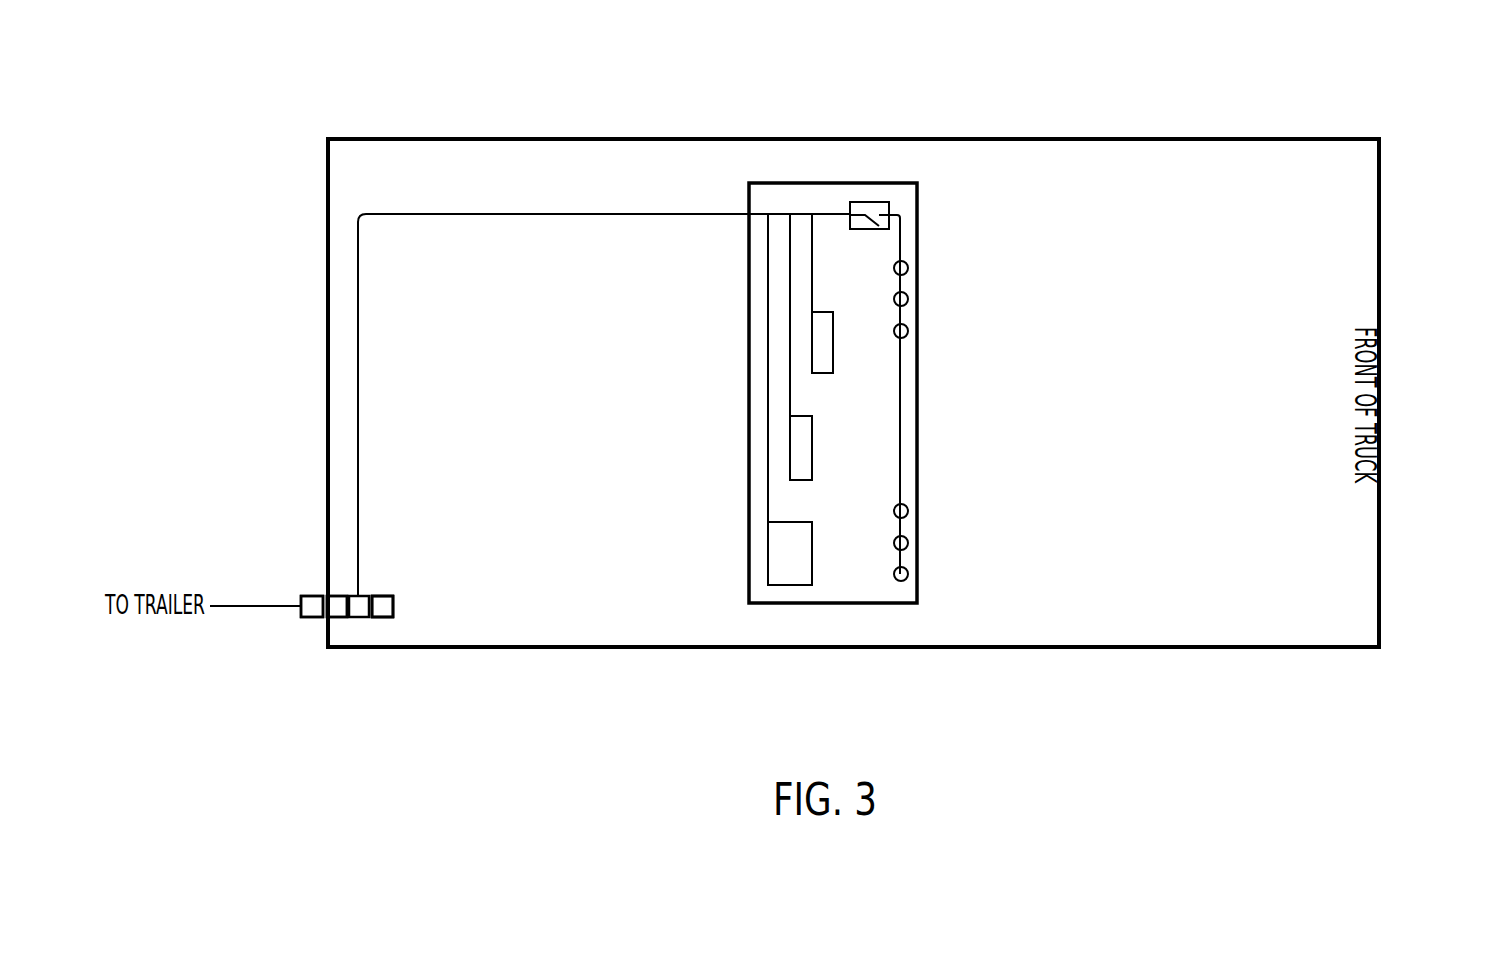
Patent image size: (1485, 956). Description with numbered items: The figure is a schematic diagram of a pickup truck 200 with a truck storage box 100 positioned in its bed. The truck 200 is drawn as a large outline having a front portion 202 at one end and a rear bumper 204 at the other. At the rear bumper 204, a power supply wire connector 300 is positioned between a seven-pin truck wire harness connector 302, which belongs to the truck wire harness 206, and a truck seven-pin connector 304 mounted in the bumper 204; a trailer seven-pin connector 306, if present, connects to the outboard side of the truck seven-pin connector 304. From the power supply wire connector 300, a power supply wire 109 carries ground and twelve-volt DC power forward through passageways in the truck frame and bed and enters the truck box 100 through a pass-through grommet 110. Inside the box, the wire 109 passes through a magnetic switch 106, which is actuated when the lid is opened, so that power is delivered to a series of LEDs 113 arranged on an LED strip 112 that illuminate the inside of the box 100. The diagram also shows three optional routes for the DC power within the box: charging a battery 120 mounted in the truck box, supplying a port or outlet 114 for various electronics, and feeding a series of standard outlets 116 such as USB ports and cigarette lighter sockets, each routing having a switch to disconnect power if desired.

The truck storage box 100 is at (862, 605).
The magnetic switch 106 is at (869, 212).
The power supply wire 109 is at (357, 365).
The pass-through grommet 110 is at (745, 210).
The LED strip 112 is at (905, 415).
The LEDs 113 is at (908, 268).
The port or outlet 114 is at (800, 447).
The standard outlets 116 is at (823, 342).
The battery 120 is at (782, 556).
The pickup truck 200 is at (411, 136).
The front portion 202 is at (1382, 598).
The rear bumper 204 is at (325, 232).
The truck wire harness 206 is at (395, 605).
The power supply wire connector 300 is at (358, 620).
The 7-pin truck wire harness connector 302 is at (383, 620).
The truck 7-pin connector 304 is at (335, 620).
The trailer 7-pin connector 306 is at (313, 593).